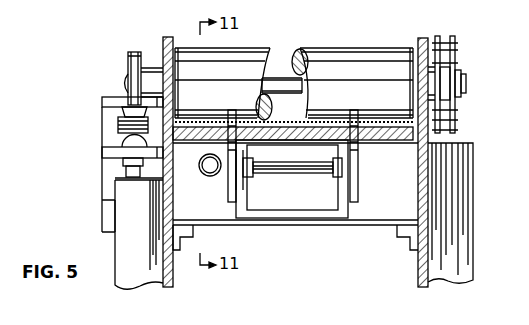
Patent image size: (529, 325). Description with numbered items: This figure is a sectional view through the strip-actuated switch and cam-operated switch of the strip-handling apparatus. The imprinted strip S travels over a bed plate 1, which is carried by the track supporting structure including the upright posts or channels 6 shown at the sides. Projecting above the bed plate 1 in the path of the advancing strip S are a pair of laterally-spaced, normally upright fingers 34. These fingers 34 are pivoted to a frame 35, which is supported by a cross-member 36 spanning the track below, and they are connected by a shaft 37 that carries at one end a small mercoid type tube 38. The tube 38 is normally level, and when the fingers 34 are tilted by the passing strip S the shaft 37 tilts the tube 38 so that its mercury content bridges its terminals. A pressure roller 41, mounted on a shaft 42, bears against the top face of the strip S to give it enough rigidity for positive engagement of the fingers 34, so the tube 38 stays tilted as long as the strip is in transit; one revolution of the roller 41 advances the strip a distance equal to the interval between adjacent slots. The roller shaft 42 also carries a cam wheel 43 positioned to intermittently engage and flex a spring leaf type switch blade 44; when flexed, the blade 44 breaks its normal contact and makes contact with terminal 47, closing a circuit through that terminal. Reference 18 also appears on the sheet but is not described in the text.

The bed plate 1 is at (386, 139).
The upright posts or channels 6 is at (144, 271).
The sheet reference 18 is at (310, 312).
The fingers 34 is at (231, 108).
The frame 35 is at (353, 192).
The cross-member 36 is at (362, 227).
The shaft 37 is at (290, 173).
The mercoid type tube 38 is at (213, 167).
The pressure roller 41 is at (350, 53).
The shaft 42 is at (466, 78).
The cam wheel 43 is at (133, 62).
The switch blade 44 is at (118, 120).
The terminal 47 is at (123, 168).
The strip S is at (290, 126).